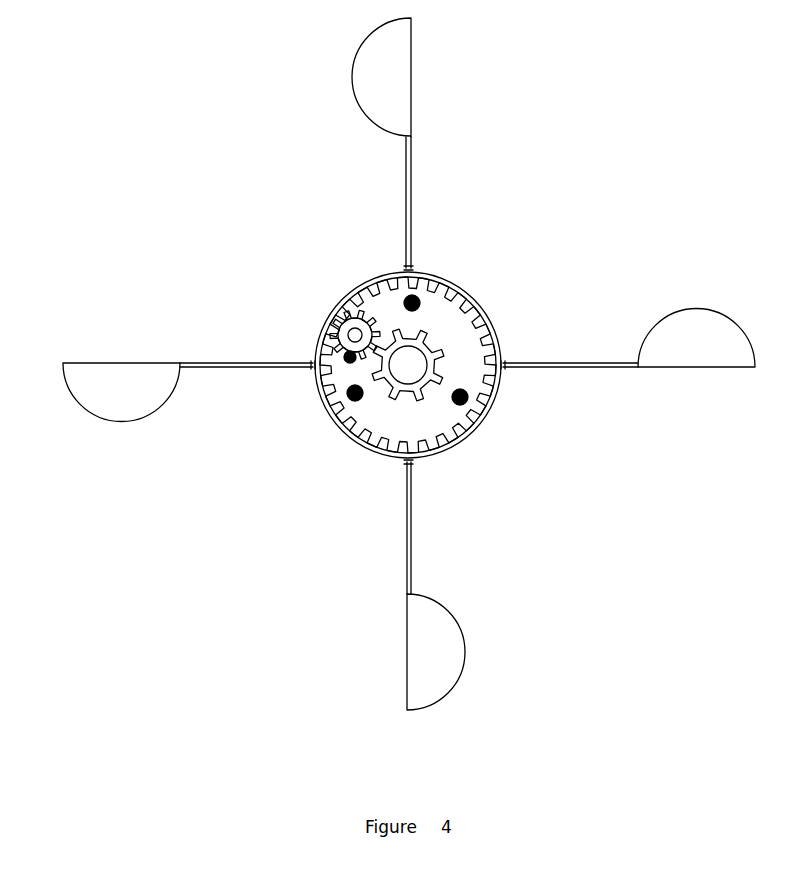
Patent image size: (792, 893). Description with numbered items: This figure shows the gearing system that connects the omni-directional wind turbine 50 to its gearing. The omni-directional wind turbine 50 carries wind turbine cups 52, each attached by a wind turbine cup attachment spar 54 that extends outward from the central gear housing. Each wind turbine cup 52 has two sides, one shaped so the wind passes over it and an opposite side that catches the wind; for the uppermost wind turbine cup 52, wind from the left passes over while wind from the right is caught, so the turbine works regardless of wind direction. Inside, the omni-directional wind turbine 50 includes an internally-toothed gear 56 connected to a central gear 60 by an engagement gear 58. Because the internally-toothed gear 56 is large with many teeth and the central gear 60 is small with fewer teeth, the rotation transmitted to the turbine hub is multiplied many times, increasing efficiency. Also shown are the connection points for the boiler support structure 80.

The omni-directional wind turbine 50 is at (574, 203).
The wind turbine cup 52 is at (412, 73).
The wind turbine cup attachment spar 54 is at (412, 210).
The internally-toothed gear 56 is at (466, 437).
The engagement gear 58 is at (328, 325).
The central gear 60 is at (416, 346).
The boiler support structure 80 is at (415, 294).